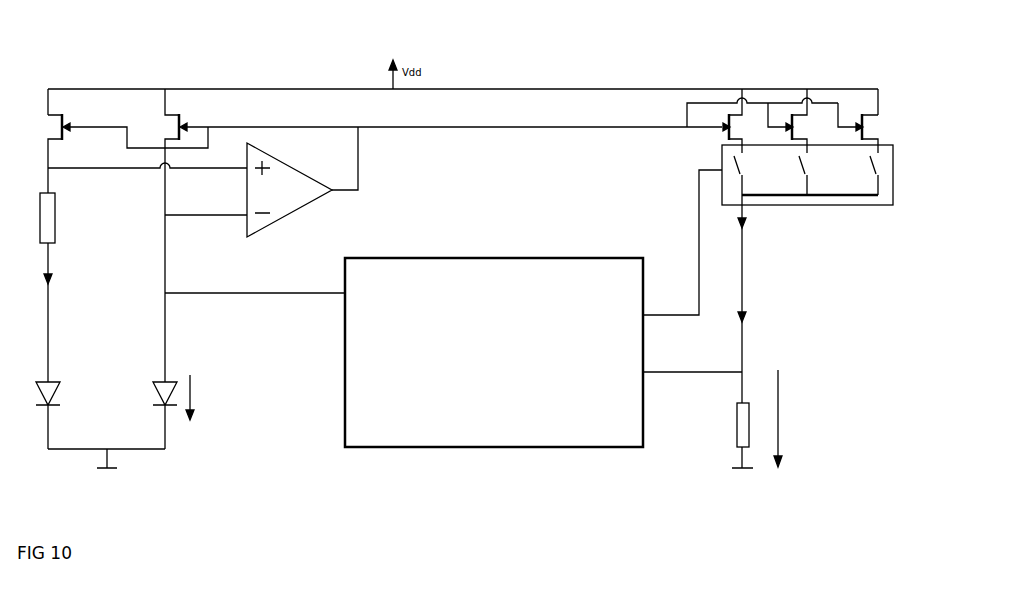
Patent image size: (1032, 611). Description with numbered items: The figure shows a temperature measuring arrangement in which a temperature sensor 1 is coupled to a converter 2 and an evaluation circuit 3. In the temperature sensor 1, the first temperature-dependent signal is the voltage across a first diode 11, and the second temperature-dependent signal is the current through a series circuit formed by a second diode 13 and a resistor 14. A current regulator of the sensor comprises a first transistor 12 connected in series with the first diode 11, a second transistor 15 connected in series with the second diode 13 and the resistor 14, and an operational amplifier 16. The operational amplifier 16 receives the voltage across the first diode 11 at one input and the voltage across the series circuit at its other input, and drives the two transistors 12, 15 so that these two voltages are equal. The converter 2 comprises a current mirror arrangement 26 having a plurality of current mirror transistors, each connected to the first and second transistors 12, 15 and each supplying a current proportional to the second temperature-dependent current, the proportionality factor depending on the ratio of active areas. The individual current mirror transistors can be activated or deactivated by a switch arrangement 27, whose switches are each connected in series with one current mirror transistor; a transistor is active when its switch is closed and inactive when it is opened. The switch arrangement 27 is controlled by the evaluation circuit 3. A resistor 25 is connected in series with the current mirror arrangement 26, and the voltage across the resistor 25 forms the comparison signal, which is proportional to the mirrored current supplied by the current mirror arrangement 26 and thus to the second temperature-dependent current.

The temperature sensor 1 is at (305, 51).
The converter 2 is at (830, 68).
The evaluation circuit 3 is at (453, 308).
The first diode 11 is at (158, 375).
The first transistor 12 is at (439, 235).
The second diode 13 is at (57, 375).
The resistor 14 is at (62, 287).
The second transistor 15 is at (102, 153).
The operational amplifier 16 is at (312, 177).
The resistor 25 is at (724, 428).
The current mirror arrangement 26 is at (900, 132).
The switch arrangement 27 is at (898, 173).